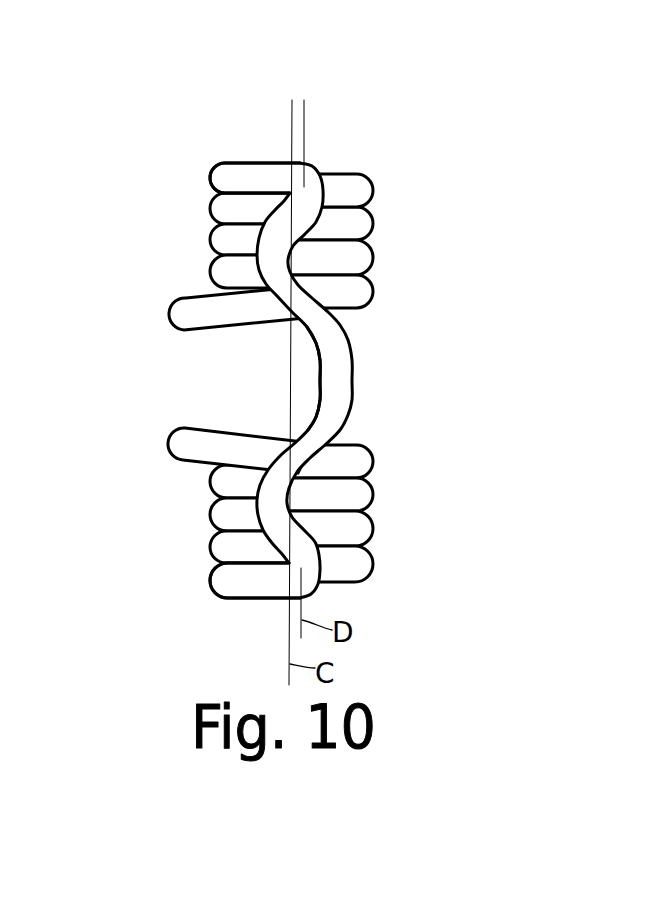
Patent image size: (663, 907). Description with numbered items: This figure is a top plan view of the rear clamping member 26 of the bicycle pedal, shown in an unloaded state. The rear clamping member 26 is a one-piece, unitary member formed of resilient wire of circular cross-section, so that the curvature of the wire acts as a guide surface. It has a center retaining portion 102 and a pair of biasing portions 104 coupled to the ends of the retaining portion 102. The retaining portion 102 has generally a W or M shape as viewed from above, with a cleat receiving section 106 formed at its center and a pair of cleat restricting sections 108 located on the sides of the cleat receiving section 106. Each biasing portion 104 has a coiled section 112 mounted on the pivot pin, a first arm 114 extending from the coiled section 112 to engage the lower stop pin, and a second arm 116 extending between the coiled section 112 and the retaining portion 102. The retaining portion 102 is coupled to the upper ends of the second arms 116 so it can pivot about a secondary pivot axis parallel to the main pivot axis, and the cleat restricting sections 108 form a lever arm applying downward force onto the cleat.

The rear clamping member 26 is at (250, 378).
The center retaining portion 102 is at (353, 353).
The biasing portions 104 is at (201, 209).
The cleat receiving section 106 is at (318, 397).
The cleat restricting sections 108 is at (282, 254).
The coiled section 112 is at (325, 174).
The first arm 114 is at (168, 313).
The second arm 116 is at (263, 167).